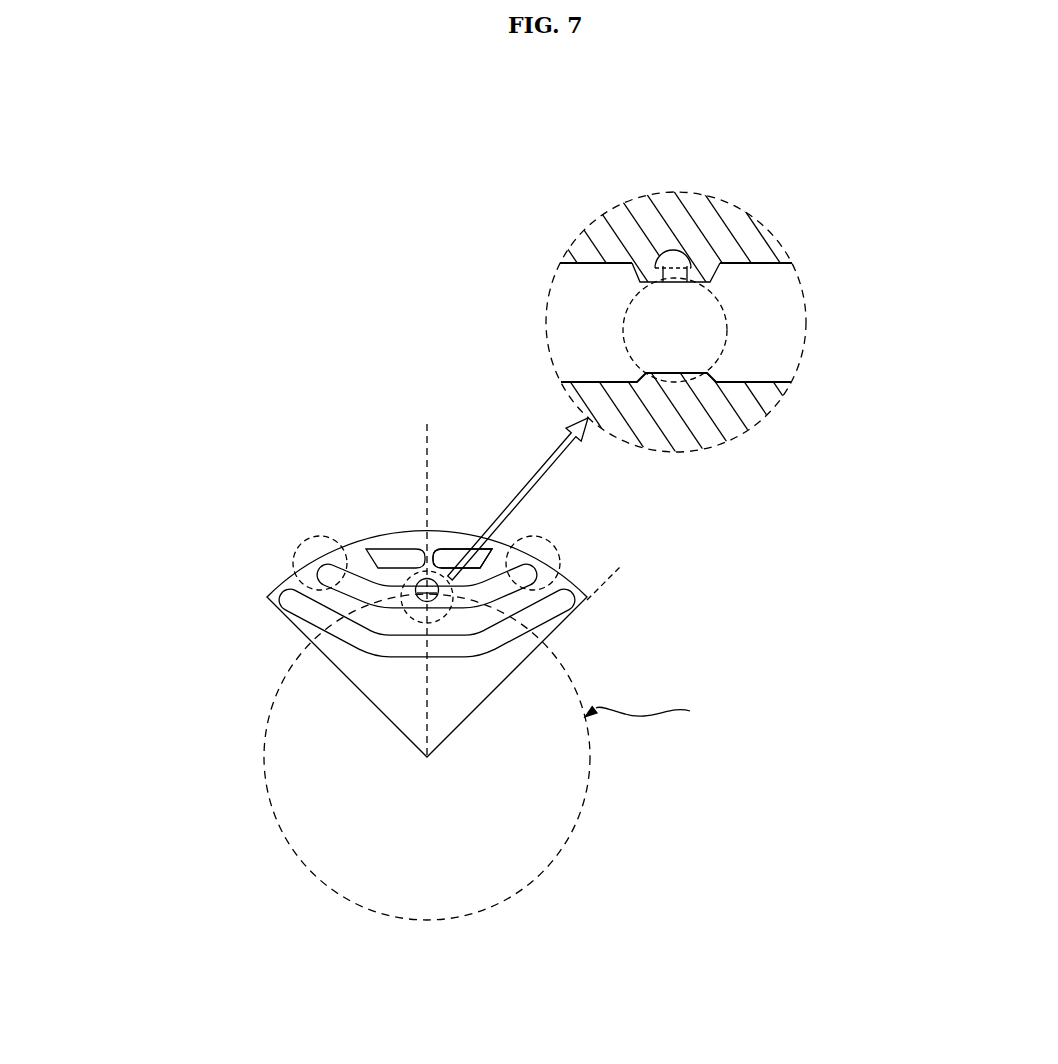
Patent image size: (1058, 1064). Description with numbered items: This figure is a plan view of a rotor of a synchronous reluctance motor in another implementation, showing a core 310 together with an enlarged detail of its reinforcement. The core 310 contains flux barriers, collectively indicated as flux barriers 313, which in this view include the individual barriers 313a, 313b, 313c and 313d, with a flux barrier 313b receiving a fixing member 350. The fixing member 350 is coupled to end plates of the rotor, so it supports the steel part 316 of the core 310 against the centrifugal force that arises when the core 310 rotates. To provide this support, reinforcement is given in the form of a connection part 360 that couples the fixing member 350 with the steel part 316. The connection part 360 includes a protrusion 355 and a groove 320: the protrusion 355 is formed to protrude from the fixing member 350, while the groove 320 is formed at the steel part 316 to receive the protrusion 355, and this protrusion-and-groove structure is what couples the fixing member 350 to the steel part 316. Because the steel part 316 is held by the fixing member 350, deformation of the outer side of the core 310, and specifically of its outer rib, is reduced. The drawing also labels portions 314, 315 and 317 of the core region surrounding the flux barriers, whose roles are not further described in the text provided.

The core 310 is at (126, 428).
The slots 313 is at (378, 457).
The first slot 313a is at (292, 593).
The flux barrier 313b is at (330, 573).
The third slot 313c is at (380, 557).
The fourth slot 313d is at (436, 556).
The plate 314 is at (453, 661).
The lower wall 315 is at (455, 606).
The steel part 316 is at (440, 580).
The rib 317 is at (452, 556).
The groove 320 is at (740, 266).
The fixing member 350 is at (675, 324).
The protrusion 355 is at (688, 256).
The connection part 360 is at (768, 218).